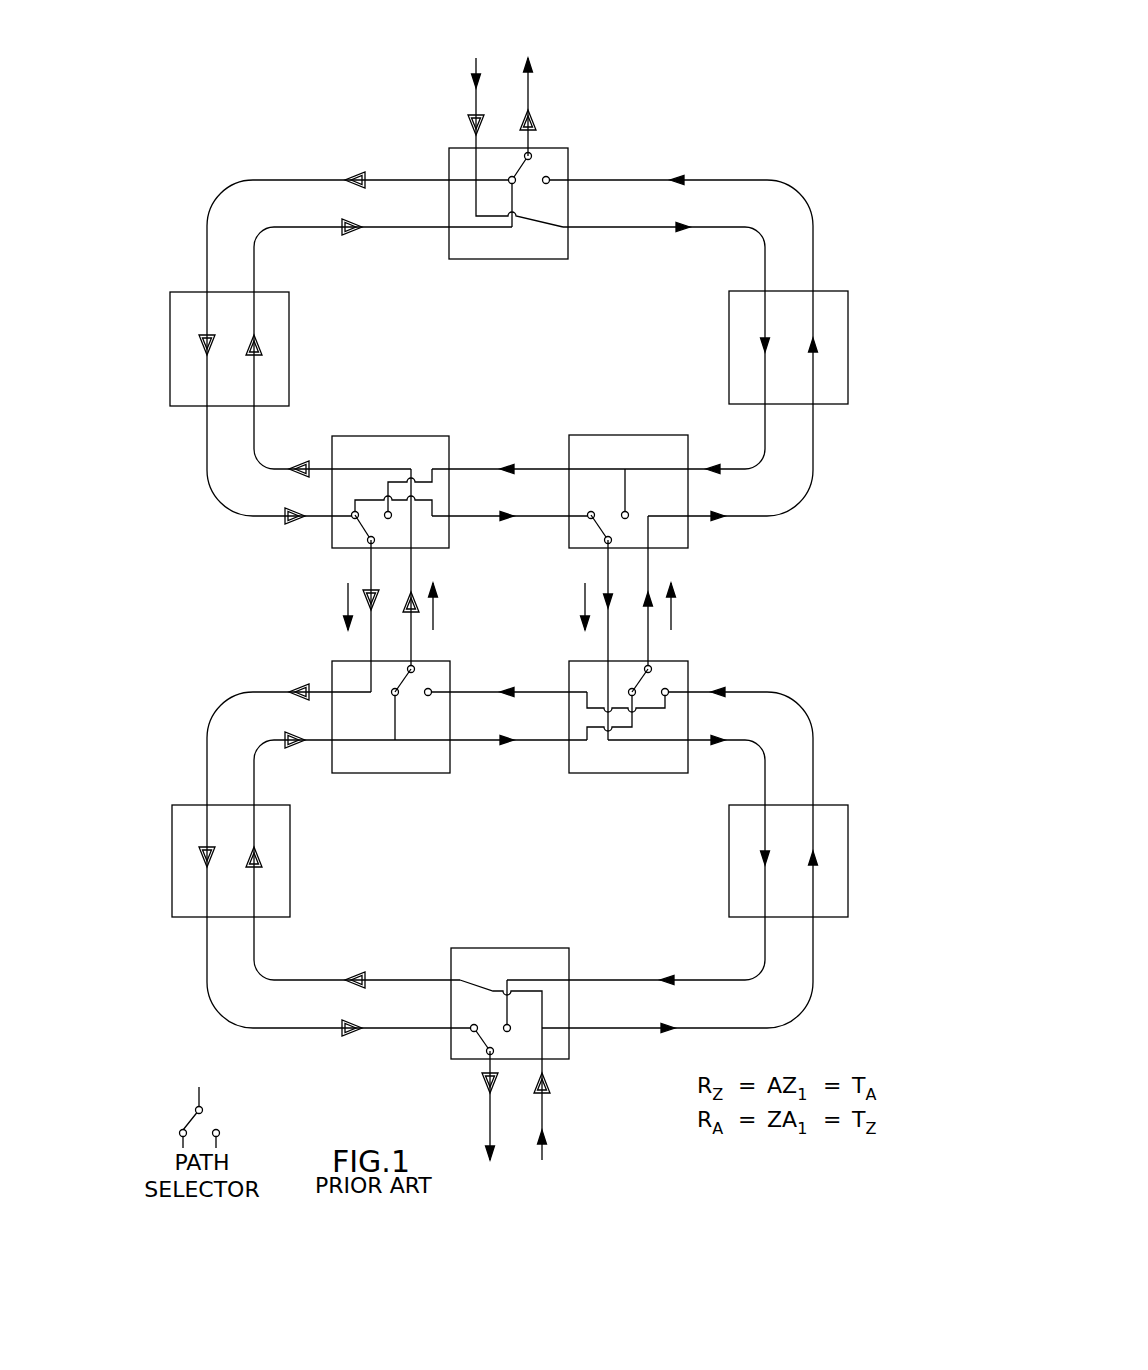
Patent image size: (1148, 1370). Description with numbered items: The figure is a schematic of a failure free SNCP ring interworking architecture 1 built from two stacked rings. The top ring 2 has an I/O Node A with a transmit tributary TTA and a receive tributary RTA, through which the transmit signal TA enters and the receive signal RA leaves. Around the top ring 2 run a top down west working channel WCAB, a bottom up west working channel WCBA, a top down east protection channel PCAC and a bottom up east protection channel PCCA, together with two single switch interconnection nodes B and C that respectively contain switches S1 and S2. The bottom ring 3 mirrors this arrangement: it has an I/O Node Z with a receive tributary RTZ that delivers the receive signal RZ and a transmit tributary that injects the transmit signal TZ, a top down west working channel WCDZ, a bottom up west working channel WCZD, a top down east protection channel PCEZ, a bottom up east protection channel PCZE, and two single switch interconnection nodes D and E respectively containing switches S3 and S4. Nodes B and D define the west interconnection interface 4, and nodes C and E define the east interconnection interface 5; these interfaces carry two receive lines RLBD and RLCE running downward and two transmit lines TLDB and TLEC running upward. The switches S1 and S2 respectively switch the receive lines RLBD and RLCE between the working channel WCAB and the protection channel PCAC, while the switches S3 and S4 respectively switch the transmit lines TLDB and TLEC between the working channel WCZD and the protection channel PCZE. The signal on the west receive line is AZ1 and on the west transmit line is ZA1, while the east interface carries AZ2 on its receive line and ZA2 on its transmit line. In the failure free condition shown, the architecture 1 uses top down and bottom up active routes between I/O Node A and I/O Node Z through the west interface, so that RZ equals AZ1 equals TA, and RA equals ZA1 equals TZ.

The failure free SNCP ring interworking architecture 1 is at (740, 100).
The top ring 2 is at (515, 331).
The bottom ring 3 is at (515, 871).
The west interconnection interface 4 is at (266, 618).
The east interconnection interface 5 is at (732, 574).
The I/O Node A is at (550, 157).
The single switch interconnection node B is at (415, 445).
The single switch interconnection node C is at (632, 443).
The single switch interconnection node D is at (392, 762).
The single switch interconnection node E is at (602, 765).
The I/O Node Z is at (460, 1062).
The switch S1 is at (365, 488).
The switch S2 is at (600, 500).
The switch S3 is at (414, 709).
The switch S4 is at (647, 697).
The top down west working channel WCAB is at (207, 258).
The bottom up west working channel WCBA is at (254, 268).
The top down east protection channel PCAC is at (764, 265).
The bottom up east protection channel PCCA is at (813, 260).
The top down west working channel WCDZ is at (207, 745).
The bottom up west working channel WCZD is at (255, 782).
The top down east protection channel PCEZ is at (767, 770).
The bottom up east protection channel PCZE is at (813, 763).
The receive line RLBD is at (370, 573).
The transmit line TLDB is at (412, 566).
The receive line RLCE is at (608, 642).
The transmit line TLEC is at (648, 642).
The transmit signal TA is at (515, 128).
The receive signal RA is at (529, 93).
The transmit tributary TTA is at (473, 143).
The receive tributary RTA is at (530, 142).
The receive tributary RTZ is at (484, 1065).
The receive signal RZ is at (500, 1149).
The transmit signal TZ is at (547, 1149).
The signal along the west interconnection interface's receive line AZ1 is at (321, 608).
The signal along the west interconnection interface's transmit line ZA1 is at (455, 608).
The signal along the east interconnection interface's receive line AZ2 is at (560, 608).
The signal along the east interconnection interface's transmit line ZA2 is at (697, 608).